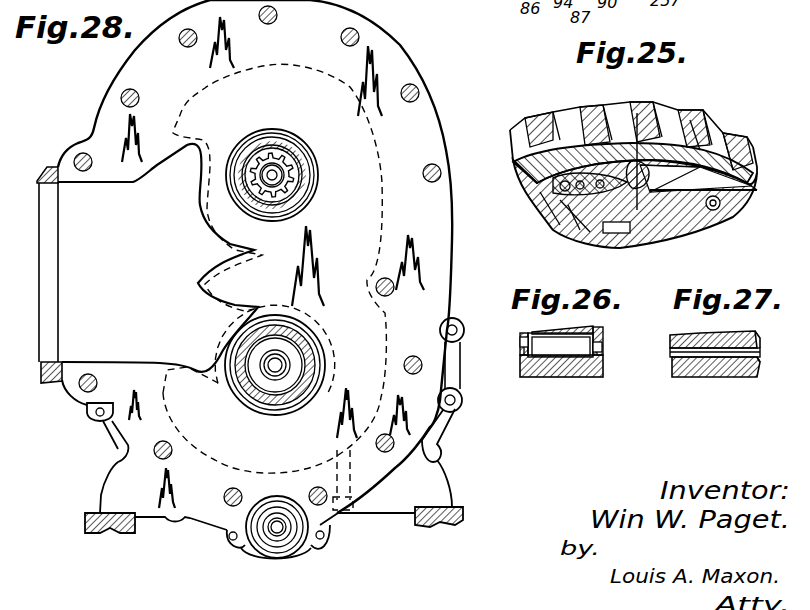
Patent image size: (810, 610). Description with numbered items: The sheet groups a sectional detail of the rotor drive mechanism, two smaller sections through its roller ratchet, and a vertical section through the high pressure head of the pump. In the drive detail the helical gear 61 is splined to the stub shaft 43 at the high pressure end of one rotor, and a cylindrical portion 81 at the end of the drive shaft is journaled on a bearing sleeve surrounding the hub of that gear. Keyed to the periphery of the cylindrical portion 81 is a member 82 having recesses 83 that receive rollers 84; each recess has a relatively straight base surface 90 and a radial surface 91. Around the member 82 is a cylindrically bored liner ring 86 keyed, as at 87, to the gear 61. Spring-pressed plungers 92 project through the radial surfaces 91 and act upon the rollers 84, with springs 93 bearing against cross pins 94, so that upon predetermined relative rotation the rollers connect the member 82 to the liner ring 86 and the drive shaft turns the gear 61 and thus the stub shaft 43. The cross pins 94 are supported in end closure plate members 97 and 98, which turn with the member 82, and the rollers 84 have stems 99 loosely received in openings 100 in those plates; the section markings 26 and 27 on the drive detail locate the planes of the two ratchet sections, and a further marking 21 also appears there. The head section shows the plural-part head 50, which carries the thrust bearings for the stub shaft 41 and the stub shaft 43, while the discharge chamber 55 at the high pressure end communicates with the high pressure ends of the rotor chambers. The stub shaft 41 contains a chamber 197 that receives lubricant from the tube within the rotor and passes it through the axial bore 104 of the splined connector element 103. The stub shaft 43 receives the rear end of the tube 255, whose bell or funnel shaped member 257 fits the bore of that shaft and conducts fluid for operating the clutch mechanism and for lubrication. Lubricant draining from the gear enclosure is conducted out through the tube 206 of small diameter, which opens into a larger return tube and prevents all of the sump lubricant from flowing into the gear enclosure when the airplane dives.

In FIG. 28, the plural-part head 50 is at (406, 58).
In FIG. 28, the stub shaft 41 is at (300, 150).
In FIG. 28, the chamber 197 is at (295, 168).
In FIG. 28, the splined connector element 103 is at (282, 185).
In FIG. 28, the axial bore 104 is at (273, 177).
In FIG. 28, the stub shaft 43 is at (240, 385).
In FIG. 28, the bell or funnel shaped member 257 is at (287, 362).
In FIG. 28, the tube 255 is at (273, 372).
In FIG. 28, the tube of small diameter 206 is at (277, 529).
In FIG. 28, the discharge chamber 55 is at (80, 333).
In FIG. 25, the helical gear 61 is at (535, 125).
In FIG. 25, the key 87 is at (593, 113).
In FIG. 25, the radial surfaces 91 is at (638, 113).
In FIG. 25, the rollers 84 is at (698, 120).
In FIG. 26, the rollers 84 is at (558, 348).
In FIG. 25, the recesses 83 is at (683, 183).
In FIG. 25, the base surfaces 90 is at (730, 143).
In FIG. 25, the liner ring 86 is at (747, 190).
In FIG. 26, the liner ring 86 is at (533, 329).
In FIG. 25, the member 82 is at (717, 223).
In FIG. 26, the member 82 is at (582, 372).
In FIG. 27, the member 82 is at (683, 374).
In FIG. 25, the cylindrical portion 81 is at (647, 245).
In FIG. 25, the spring-pressed plungers 92 is at (597, 237).
In FIG. 25, the springs 93 is at (573, 237).
In FIG. 25, the cross pins 94 is at (547, 207).
In FIG. 27, the cross pins 94 is at (725, 357).
In FIG. 25, the shaft 27 is at (573, 193).
In FIG. 25, the frame member 21 is at (577, 207).
In FIG. 25, the bore 26 is at (625, 160).
In FIG. 26, the end closure plate member 97 is at (523, 336).
In FIG. 27, the end closure plate member 97 is at (678, 339).
In FIG. 26, the end closure plate member 98 is at (603, 362).
In FIG. 27, the end closure plate member 98 is at (753, 337).
In FIG. 26, the openings 100 is at (522, 346).
In FIG. 26, the stems 99 is at (525, 353).